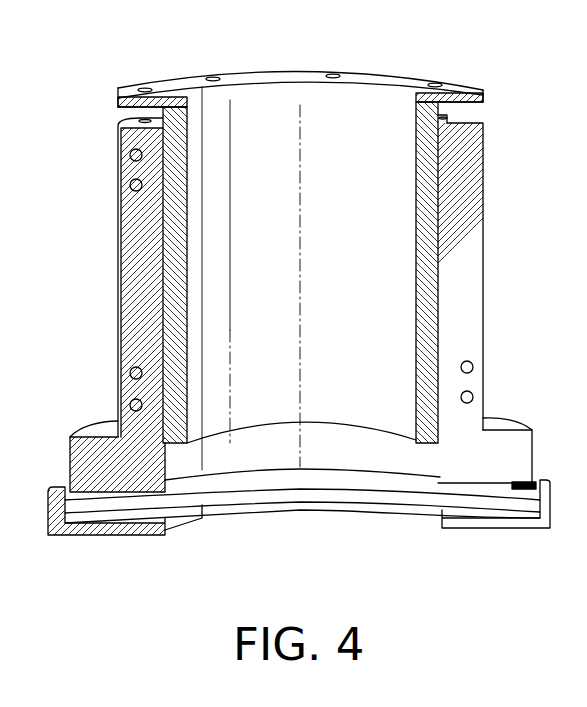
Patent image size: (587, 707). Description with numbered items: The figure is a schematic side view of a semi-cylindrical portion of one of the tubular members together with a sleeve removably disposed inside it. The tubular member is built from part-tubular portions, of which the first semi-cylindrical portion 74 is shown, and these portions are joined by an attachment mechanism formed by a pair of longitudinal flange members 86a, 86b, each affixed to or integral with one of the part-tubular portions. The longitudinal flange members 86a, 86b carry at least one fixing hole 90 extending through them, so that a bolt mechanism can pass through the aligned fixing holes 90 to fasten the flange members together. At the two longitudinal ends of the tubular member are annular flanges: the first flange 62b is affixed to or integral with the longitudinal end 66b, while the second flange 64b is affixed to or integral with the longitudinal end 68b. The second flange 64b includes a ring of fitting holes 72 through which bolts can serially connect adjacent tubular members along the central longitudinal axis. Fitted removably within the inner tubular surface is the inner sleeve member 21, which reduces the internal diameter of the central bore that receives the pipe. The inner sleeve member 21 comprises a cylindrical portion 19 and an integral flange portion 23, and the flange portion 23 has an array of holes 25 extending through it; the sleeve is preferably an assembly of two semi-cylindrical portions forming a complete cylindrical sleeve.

The cylindrical portion 19 is at (277, 400).
The inner sleeve member 21 is at (236, 115).
The flange portion 23 is at (292, 74).
The holes 25 is at (436, 83).
The first flange 62b is at (148, 110).
The second flange 64b is at (458, 470).
The longitudinal end 66b is at (472, 123).
The longitudinal end 68b is at (440, 447).
The fitting holes 72 is at (133, 125).
The first semi-cylindrical portion 74 is at (463, 230).
The longitudinal flange member 86a is at (150, 440).
The longitudinal flange member 86b is at (485, 463).
The fixing hole 90 is at (128, 404).